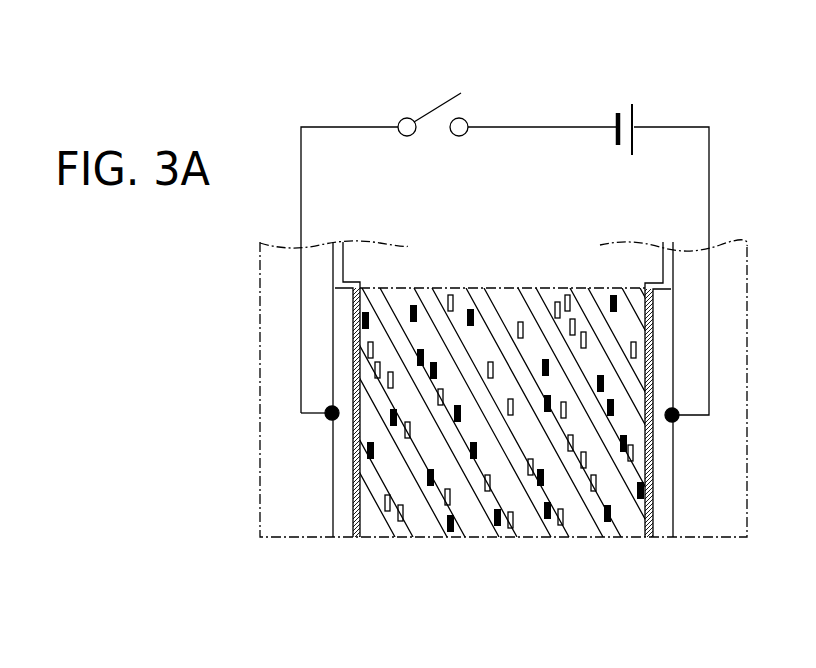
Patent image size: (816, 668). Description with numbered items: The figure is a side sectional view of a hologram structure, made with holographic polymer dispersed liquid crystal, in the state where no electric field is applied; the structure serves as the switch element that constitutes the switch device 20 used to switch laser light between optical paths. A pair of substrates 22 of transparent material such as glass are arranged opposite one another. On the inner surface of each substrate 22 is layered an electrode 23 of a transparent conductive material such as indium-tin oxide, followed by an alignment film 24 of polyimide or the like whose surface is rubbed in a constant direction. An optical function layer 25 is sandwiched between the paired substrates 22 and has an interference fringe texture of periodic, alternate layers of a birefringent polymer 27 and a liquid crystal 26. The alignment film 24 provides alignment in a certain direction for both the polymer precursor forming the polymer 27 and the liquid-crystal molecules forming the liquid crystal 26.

The switch device 20 is at (517, 104).
The substrate 22 is at (284, 539).
The electrode 23 is at (340, 539).
The alignment film 24 is at (355, 539).
The optical function layer 25 is at (503, 288).
The liquid crystal 26 is at (517, 540).
The polymer 27 is at (480, 539).